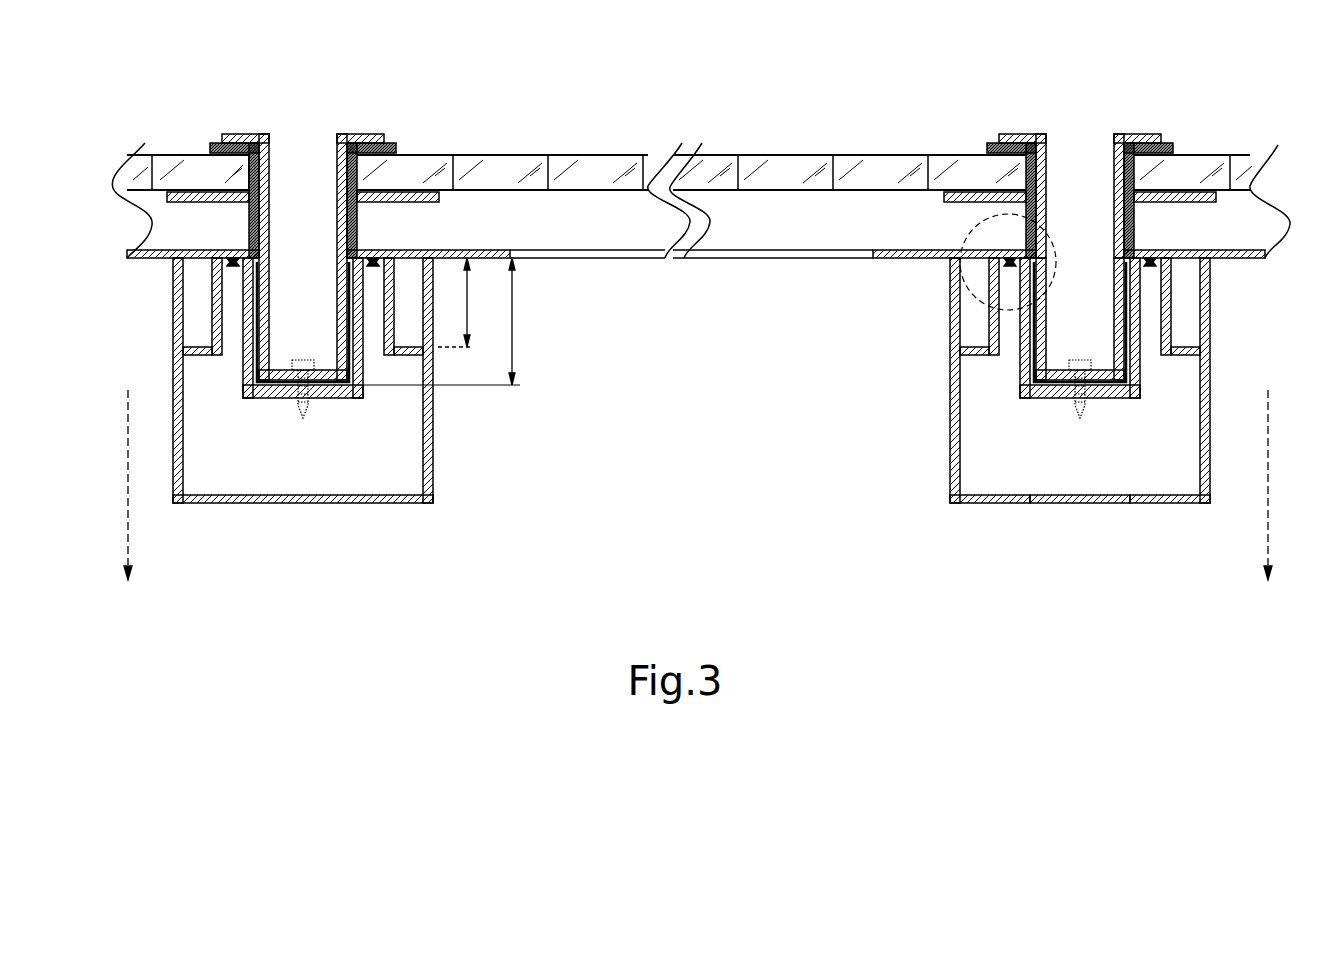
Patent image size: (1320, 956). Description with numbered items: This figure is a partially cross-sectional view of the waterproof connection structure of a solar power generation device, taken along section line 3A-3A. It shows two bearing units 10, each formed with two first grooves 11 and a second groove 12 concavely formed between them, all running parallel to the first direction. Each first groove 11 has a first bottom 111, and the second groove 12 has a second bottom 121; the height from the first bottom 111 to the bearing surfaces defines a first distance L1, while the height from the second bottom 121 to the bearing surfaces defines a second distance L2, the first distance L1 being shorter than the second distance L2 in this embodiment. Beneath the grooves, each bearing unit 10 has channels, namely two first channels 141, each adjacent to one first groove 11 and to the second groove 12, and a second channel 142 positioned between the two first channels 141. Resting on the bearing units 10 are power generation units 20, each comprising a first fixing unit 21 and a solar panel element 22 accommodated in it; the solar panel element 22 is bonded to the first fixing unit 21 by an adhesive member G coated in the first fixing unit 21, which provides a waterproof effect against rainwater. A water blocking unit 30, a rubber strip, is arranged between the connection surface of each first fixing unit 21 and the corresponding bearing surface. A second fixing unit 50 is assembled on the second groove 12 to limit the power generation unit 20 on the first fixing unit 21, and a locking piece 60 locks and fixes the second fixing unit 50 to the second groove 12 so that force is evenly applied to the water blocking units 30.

The bearing unit 10 is at (1073, 418).
The first groove 11 is at (985, 298).
The first bottom 111 is at (973, 346).
The second groove 12 is at (999, 346).
The second bottom 121 is at (1035, 377).
The first channel 141 is at (990, 477).
The second channel 142 is at (1080, 477).
The power generation unit 20 is at (528, 161).
The first fixing unit 21 is at (990, 141).
The solar panel element 22 is at (593, 157).
The water blocking unit 30 is at (1148, 262).
The second fixing unit 50 is at (1124, 133).
The locking piece 60 is at (1077, 358).
The adhesive member G is at (403, 150).
The first distance L1 is at (470, 302).
The second distance L2 is at (456, 321).
The section line 3A- 3A is at (697, 507).